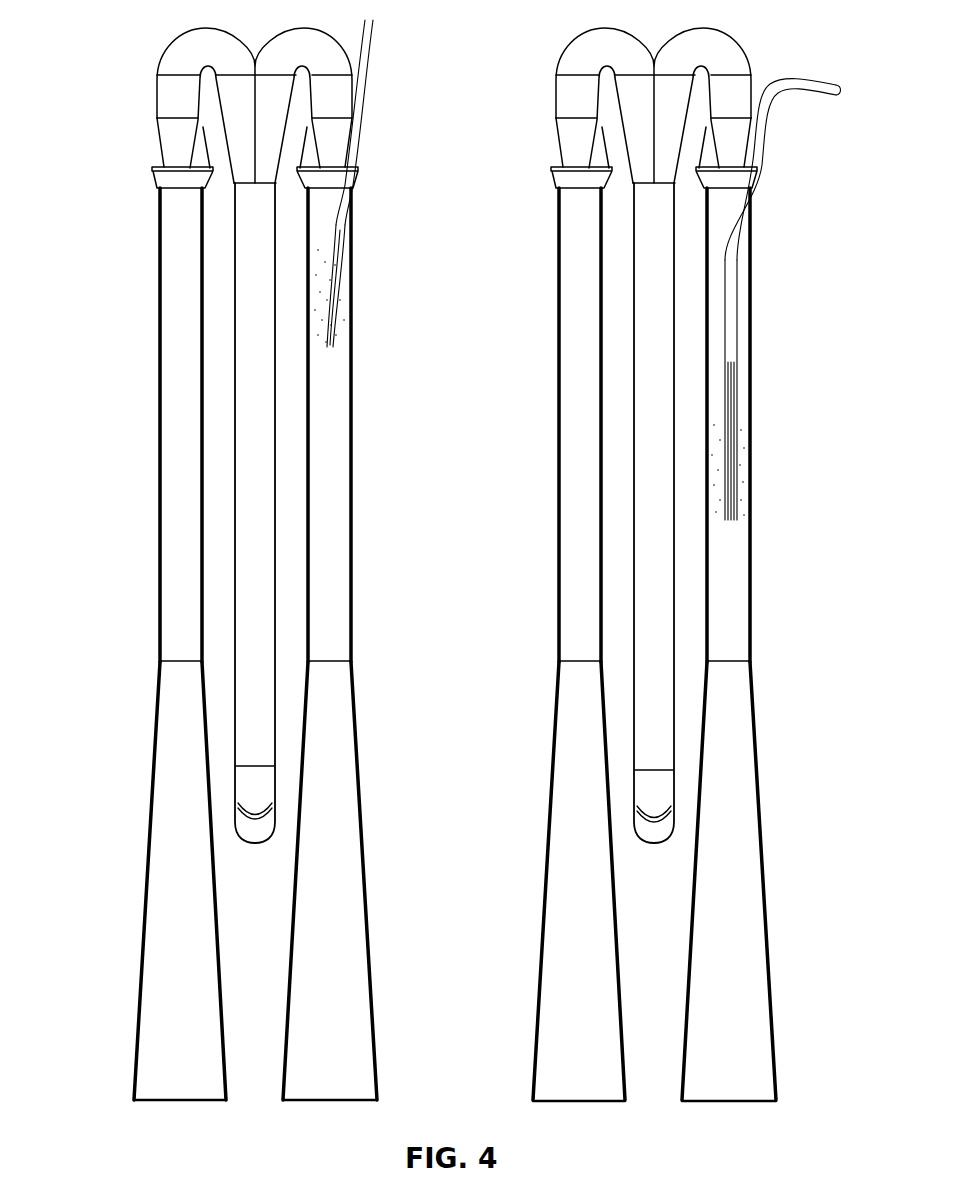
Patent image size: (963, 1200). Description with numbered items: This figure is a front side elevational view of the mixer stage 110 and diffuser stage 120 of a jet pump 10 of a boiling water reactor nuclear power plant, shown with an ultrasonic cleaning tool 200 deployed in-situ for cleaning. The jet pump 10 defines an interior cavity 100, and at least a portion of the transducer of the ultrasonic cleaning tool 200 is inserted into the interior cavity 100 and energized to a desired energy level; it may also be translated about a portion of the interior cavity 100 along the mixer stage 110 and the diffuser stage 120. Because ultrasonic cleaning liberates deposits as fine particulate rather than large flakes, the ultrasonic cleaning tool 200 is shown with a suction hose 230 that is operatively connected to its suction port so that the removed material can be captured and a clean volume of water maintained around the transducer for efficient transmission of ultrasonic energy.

The jet pump 10 is at (128, 60).
The interior cavity 100 is at (338, 690).
The mixer stage 110 is at (158, 358).
The diffuser stage 120 is at (128, 722).
The ultrasonic cleaning tool 200 is at (340, 268).
The suction hose 230 is at (362, 85).